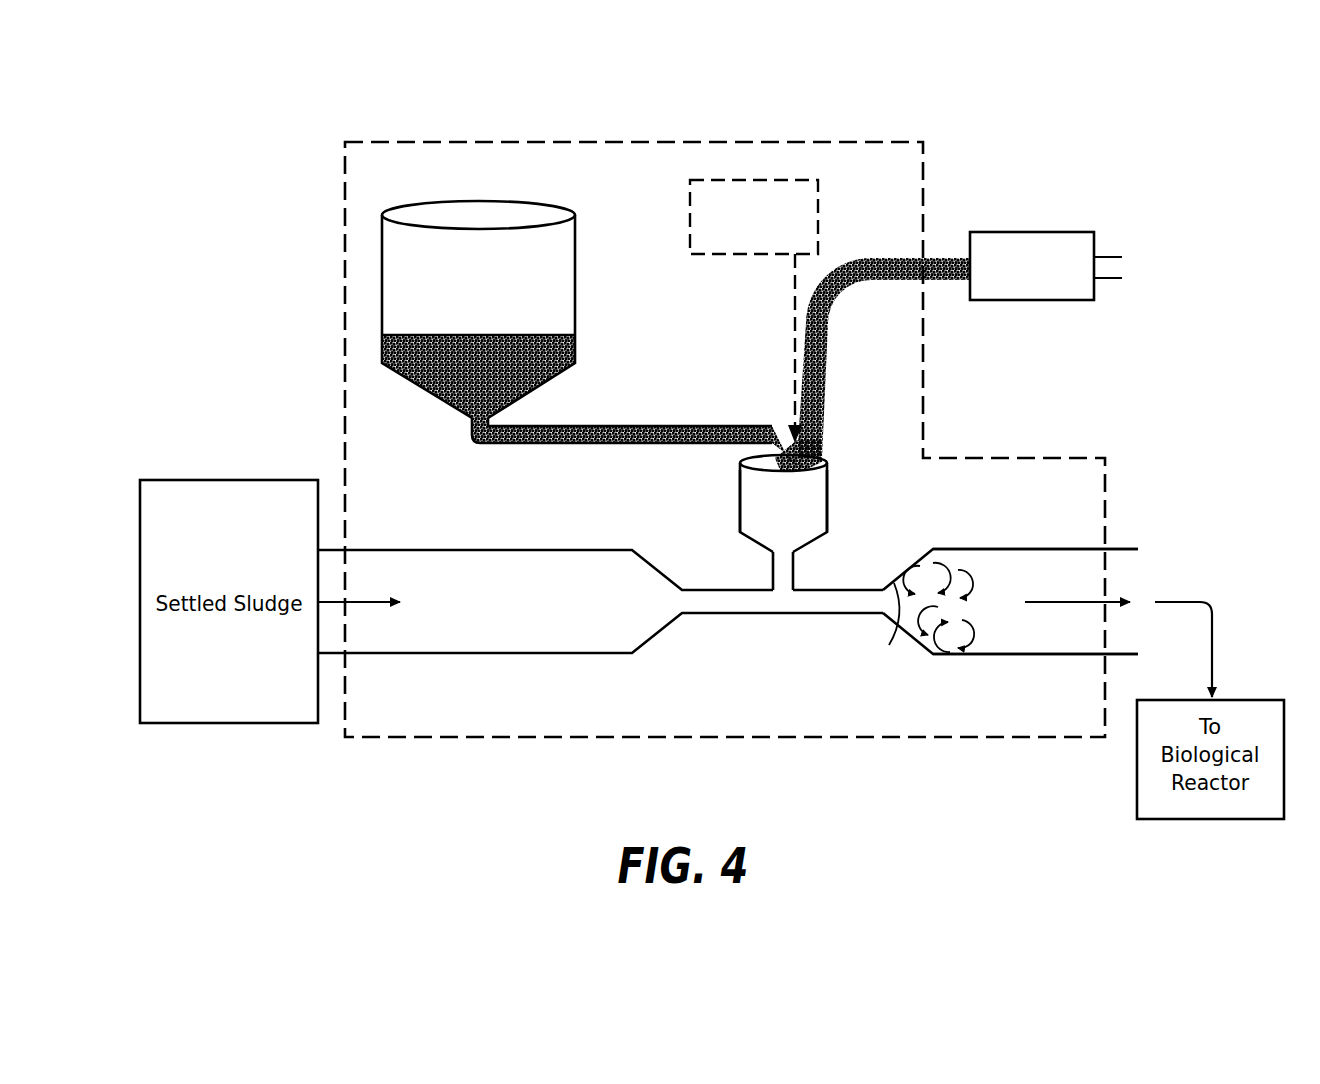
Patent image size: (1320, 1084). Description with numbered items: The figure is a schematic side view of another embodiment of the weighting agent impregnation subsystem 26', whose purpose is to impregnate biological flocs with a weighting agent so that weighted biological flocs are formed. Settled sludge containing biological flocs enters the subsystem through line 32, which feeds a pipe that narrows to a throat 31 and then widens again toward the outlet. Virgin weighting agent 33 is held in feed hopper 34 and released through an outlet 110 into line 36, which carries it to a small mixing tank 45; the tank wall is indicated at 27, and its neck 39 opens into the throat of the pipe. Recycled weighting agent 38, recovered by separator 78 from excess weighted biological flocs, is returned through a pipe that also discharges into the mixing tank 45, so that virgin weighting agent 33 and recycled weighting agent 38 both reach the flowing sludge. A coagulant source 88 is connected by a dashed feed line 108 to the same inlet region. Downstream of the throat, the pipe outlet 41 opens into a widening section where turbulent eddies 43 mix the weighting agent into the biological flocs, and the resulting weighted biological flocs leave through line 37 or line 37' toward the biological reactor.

The weighting agent impregnation subsystem 26' is at (725, 439).
The mixing tank wall / inlet 27 is at (831, 485).
The venturi throat 31 is at (786, 618).
The line 32 is at (448, 549).
The virgin weighting agent 33 is at (575, 352).
The feed hopper 34 is at (460, 287).
The line 36 is at (683, 426).
The line 37 is at (1010, 571).
The line 37' is at (1035, 601).
The recycled weighting agent 38 is at (830, 320).
The feed neck 39 is at (772, 571).
The venturi outlet 41 is at (898, 618).
The turbulent mixing eddies 43 is at (968, 592).
The mixing tank 45 is at (771, 517).
The separator 78 is at (1020, 299).
The coagulant source 88 is at (742, 246).
The coagulant feed line 108 is at (794, 291).
The tank outlet valve 110 is at (458, 421).